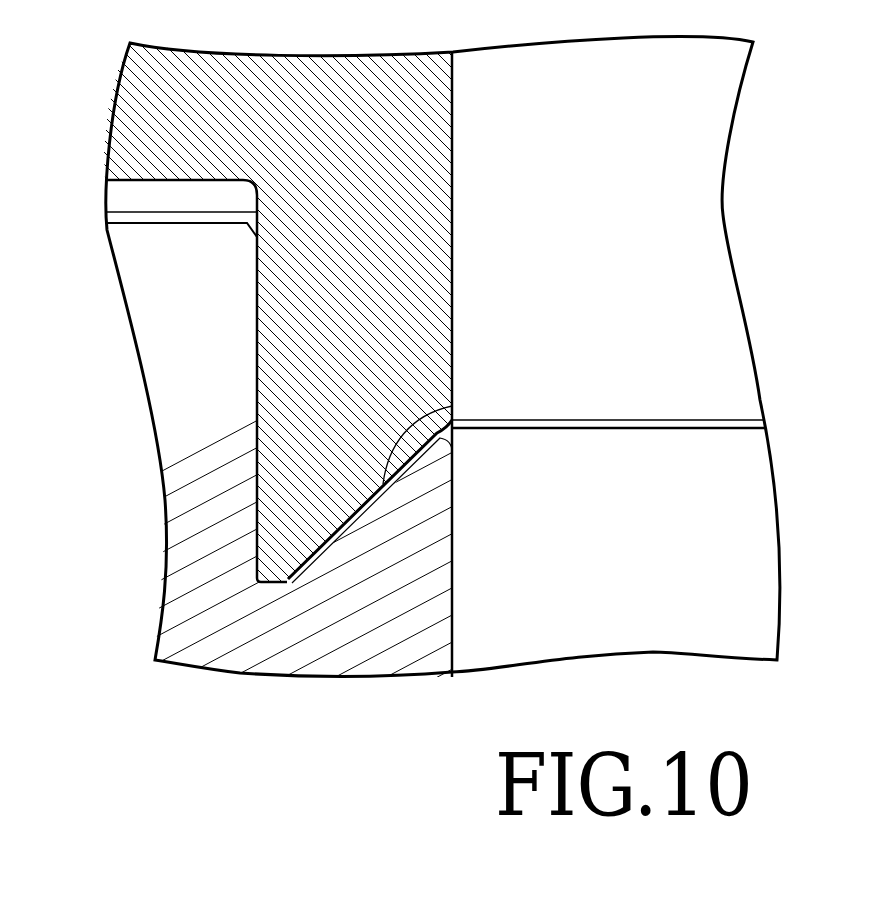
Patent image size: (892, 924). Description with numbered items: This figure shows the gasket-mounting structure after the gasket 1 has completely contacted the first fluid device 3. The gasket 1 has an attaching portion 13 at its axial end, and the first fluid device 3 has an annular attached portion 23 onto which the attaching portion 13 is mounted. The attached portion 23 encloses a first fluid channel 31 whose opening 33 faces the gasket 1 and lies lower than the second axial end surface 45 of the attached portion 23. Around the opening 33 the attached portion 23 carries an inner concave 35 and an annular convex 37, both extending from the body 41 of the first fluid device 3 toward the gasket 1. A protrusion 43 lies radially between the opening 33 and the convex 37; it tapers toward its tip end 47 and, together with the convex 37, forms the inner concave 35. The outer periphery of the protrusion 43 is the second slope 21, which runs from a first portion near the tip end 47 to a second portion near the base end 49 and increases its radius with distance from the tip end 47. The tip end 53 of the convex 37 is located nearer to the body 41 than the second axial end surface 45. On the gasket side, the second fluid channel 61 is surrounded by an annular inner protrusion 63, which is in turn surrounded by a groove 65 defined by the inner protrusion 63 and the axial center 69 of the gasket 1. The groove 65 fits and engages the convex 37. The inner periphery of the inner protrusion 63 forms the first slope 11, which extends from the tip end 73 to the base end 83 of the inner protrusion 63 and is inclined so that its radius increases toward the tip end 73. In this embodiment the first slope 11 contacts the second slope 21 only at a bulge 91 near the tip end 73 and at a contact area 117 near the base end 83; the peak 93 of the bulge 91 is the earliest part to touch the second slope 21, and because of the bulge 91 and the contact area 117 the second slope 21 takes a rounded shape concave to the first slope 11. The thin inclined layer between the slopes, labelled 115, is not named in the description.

The gasket 1 is at (343, 137).
The first fluid device 3 is at (220, 637).
The first slope 11 is at (402, 479).
The attaching portion 13 is at (288, 512).
The second slope 21 is at (394, 490).
The attached portion 23 is at (757, 525).
The first fluid channel 31 is at (665, 577).
The opening 33 is at (695, 450).
The inner concave 35 is at (273, 589).
The convex 37 is at (127, 220).
The body 41 is at (453, 660).
The protrusion 43 is at (437, 515).
The second axial end surface 45 is at (233, 212).
The tip end 47 is at (452, 425).
The base end 49 is at (453, 583).
The tip end 53 is at (222, 220).
The second fluid channel 61 is at (595, 328).
The inner protrusion 63 is at (457, 303).
The groove 65 is at (117, 190).
The axial center 69 is at (178, 143).
The tip end 73 is at (298, 586).
The base end 83 is at (412, 168).
The bulge 91 is at (304, 585).
The peak 93 is at (294, 585).
The inclined thin layer 115 is at (370, 513).
The contact area 117 is at (455, 448).